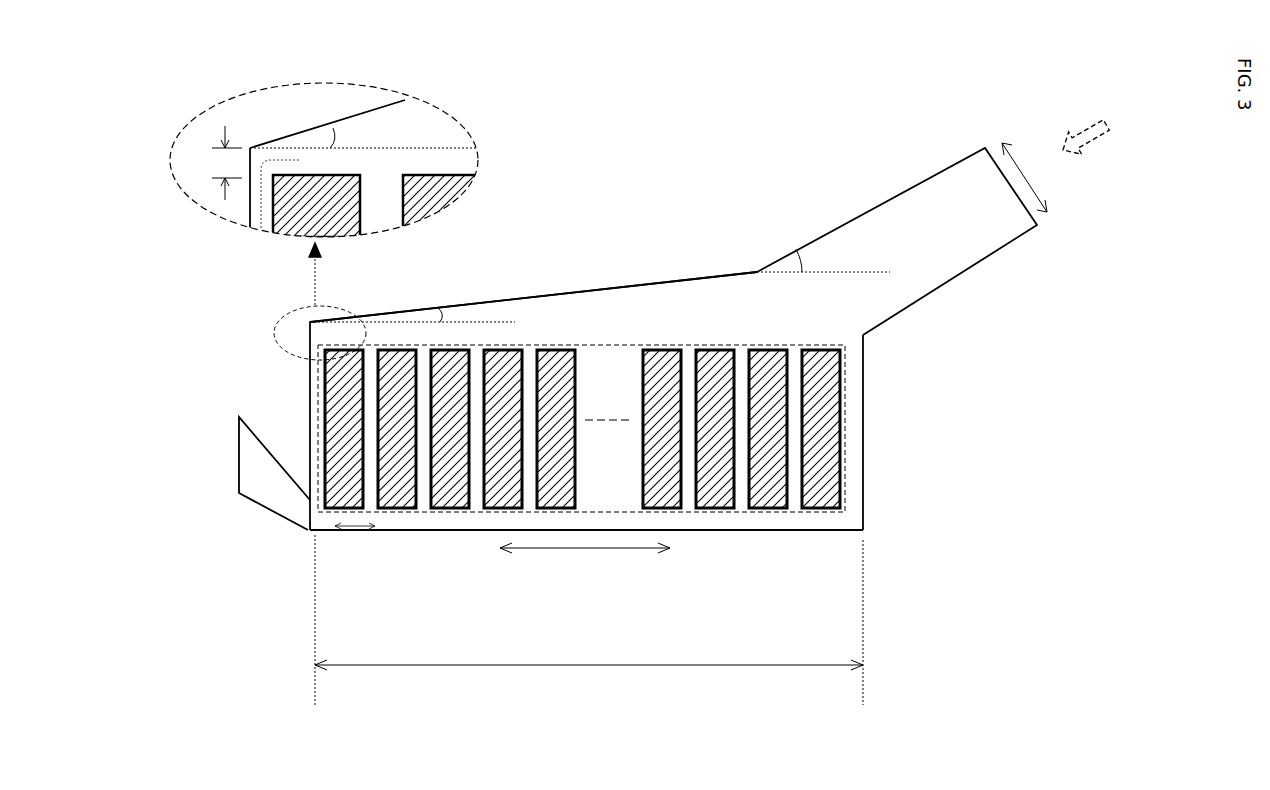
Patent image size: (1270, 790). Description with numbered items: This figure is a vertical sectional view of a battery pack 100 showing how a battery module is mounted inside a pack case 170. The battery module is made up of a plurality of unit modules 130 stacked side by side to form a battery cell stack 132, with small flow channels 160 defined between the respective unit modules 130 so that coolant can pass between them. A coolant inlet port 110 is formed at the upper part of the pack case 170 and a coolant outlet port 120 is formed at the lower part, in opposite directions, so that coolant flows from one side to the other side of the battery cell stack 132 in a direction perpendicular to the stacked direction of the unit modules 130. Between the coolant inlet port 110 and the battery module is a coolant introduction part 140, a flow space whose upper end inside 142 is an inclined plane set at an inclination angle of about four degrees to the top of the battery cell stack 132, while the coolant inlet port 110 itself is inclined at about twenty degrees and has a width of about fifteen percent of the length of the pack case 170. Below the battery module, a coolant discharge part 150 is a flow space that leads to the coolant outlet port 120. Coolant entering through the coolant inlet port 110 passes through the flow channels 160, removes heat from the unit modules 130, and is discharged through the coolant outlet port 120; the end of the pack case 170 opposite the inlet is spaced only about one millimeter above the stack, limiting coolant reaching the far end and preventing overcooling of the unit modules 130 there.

The battery pack 100 is at (167, 83).
The coolant inlet port 110 is at (990, 237).
The coolant outlet port 120 is at (239, 493).
The unit module 130 is at (403, 508).
The battery cell stack 132 is at (731, 510).
The coolant introduction part 140 is at (716, 318).
The upper end inside 142 is at (477, 303).
The coolant discharge part 150 is at (480, 538).
The flow channel 160 is at (794, 495).
The pack case 170 is at (292, 385).